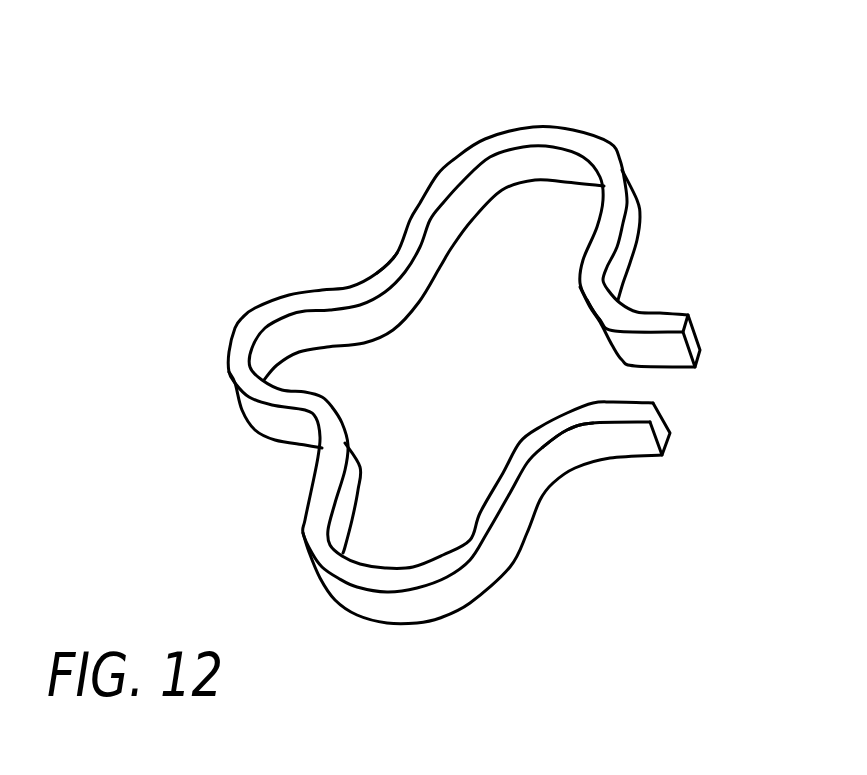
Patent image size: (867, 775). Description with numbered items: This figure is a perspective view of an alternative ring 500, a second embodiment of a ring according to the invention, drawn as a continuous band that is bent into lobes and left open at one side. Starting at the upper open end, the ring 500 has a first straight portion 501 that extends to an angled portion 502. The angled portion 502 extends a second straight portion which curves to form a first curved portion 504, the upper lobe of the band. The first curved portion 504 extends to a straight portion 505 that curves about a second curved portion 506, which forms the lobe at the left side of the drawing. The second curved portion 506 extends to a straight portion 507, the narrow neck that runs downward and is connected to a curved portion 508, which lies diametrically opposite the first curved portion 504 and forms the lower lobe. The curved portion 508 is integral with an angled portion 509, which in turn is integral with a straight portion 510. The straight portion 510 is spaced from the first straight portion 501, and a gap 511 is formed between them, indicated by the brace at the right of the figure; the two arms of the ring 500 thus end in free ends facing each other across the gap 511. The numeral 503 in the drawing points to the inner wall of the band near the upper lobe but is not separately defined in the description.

The ring 500 is at (421, 96).
The first straight portion 501 is at (670, 312).
The angled portion 502 is at (600, 326).
The inner wall of upper loop 503 is at (600, 232).
The first curved portion 504 is at (563, 130).
The straight portion 505 is at (375, 283).
The second curved portion 506 is at (243, 318).
The straight portion 507 is at (340, 418).
The curved portion 508 is at (408, 612).
The angled portion 509 is at (573, 455).
The straight portion 510 is at (640, 457).
The gap 511 is at (703, 367).